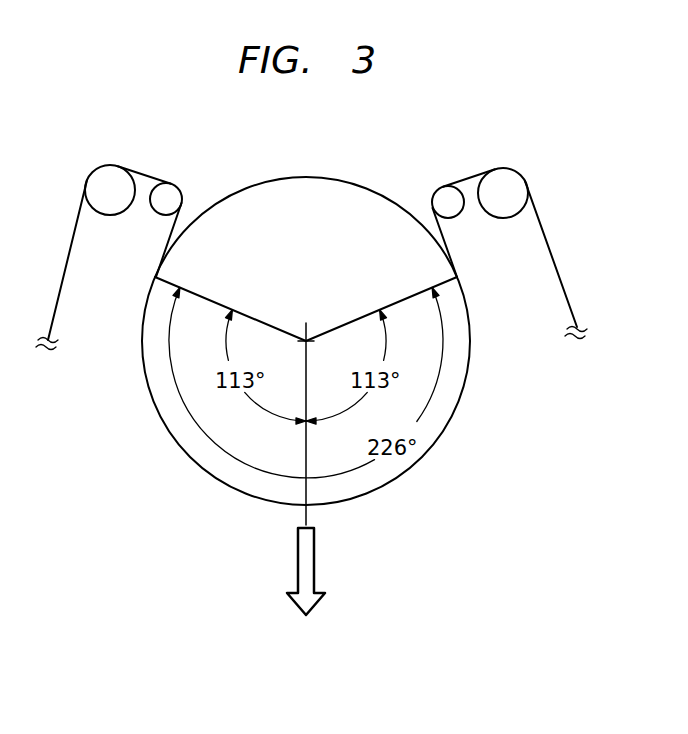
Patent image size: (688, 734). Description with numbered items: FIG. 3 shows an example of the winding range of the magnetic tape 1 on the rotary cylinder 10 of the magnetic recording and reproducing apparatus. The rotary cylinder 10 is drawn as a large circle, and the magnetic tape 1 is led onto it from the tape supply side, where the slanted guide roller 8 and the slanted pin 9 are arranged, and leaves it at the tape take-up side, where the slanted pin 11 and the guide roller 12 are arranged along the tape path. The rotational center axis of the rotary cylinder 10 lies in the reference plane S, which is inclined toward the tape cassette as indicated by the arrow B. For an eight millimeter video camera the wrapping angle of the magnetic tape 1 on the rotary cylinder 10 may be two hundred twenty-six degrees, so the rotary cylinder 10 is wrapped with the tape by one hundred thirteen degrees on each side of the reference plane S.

The magnetic tape 1 is at (560, 273).
The slanted guide roller 8 is at (100, 176).
The slanted pin 9 is at (163, 192).
The rotary cylinder 10 is at (298, 185).
The slanted pin 11 is at (442, 192).
The guide roller 12 is at (502, 178).
The reference plane S is at (307, 521).
The direction of inclination B is at (312, 571).